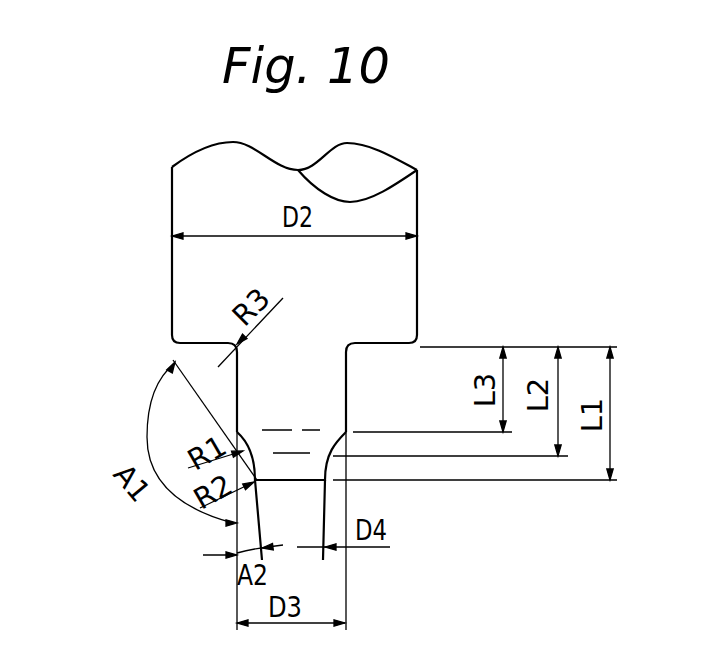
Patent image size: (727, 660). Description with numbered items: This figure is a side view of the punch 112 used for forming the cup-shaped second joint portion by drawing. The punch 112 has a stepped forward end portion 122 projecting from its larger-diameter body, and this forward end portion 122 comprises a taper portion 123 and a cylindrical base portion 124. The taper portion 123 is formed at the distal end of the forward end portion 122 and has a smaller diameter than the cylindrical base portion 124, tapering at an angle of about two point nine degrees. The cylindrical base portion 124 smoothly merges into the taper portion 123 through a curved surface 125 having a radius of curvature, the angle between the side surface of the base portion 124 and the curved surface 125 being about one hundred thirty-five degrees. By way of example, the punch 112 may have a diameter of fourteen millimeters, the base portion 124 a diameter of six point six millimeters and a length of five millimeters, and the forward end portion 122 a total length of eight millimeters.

The punch 112 is at (437, 200).
The stepped forward end portion 122 is at (233, 383).
The taper portion 123 is at (290, 465).
The cylindrical base portion 124 is at (327, 377).
The curved surface 125 is at (293, 440).